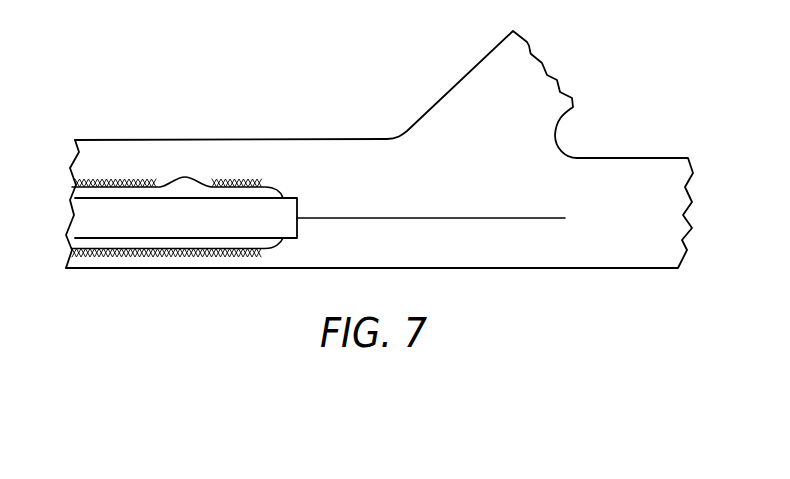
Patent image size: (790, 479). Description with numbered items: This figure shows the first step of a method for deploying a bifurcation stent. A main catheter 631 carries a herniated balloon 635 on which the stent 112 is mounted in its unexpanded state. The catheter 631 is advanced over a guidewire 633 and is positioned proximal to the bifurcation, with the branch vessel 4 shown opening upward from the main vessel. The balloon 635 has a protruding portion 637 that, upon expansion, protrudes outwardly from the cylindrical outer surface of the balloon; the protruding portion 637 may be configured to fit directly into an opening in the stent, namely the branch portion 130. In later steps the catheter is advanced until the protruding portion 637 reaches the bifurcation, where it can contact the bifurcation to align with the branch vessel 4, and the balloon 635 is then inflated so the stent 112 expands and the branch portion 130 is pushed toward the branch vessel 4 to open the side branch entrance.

The branch vessel 4 is at (484, 62).
The stent 112 is at (202, 258).
The branch portion 130 is at (123, 178).
The main catheter 631 is at (290, 205).
The guidewire 633 is at (458, 216).
The herniated balloon 635 is at (120, 239).
The protruding portion 637 is at (185, 177).